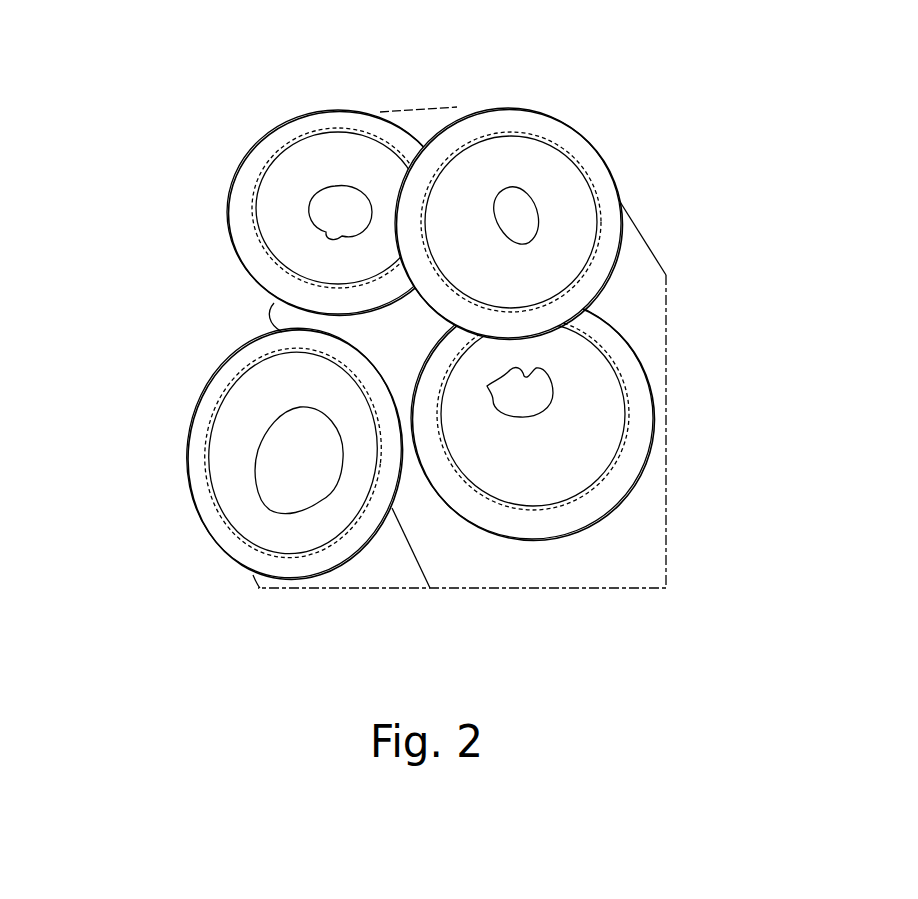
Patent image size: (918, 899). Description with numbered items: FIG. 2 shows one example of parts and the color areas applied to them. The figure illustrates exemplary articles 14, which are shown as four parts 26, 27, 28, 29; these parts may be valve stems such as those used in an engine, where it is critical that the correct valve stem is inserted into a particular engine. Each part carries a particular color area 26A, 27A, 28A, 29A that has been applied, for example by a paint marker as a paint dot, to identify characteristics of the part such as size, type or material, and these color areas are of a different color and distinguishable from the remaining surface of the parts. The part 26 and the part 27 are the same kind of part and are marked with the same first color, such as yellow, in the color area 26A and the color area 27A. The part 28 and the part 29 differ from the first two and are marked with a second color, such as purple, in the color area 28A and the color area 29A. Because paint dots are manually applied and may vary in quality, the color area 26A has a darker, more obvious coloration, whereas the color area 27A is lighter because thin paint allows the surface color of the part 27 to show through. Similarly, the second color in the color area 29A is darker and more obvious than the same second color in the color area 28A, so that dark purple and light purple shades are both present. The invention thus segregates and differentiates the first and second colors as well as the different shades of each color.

The articles 14 is at (686, 245).
The part 26 is at (543, 522).
The color area 26A is at (535, 388).
The part 27 is at (500, 123).
The color area 27A is at (522, 196).
The part 28 is at (203, 400).
The color area 28A is at (283, 463).
The part 29 is at (305, 125).
The color area 29A is at (333, 197).